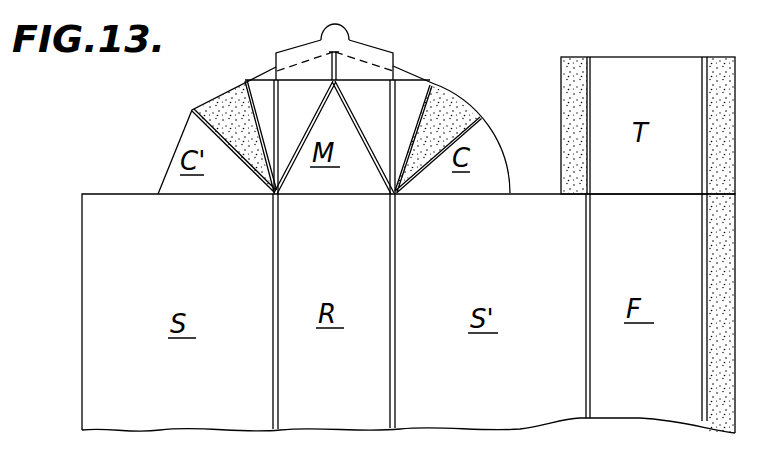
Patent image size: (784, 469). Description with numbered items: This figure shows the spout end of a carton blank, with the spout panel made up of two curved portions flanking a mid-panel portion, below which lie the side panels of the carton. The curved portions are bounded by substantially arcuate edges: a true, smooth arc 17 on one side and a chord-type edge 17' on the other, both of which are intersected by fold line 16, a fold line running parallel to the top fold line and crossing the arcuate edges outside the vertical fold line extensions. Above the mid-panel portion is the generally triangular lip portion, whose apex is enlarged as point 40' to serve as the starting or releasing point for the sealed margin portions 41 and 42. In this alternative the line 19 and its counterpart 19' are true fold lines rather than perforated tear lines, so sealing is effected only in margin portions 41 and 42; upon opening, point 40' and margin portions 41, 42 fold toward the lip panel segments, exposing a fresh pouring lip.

The sealed margin portion 41 is at (290, 52).
The fold line 19 is at (305, 40).
The enlarged point 40' is at (357, 26).
The sealed margin portion 42 is at (377, 56).
The fold line 19' is at (404, 57).
The fold line 16 is at (397, 86).
The arcuate edge 17 is at (480, 138).
The arcuate edge 17' is at (195, 130).